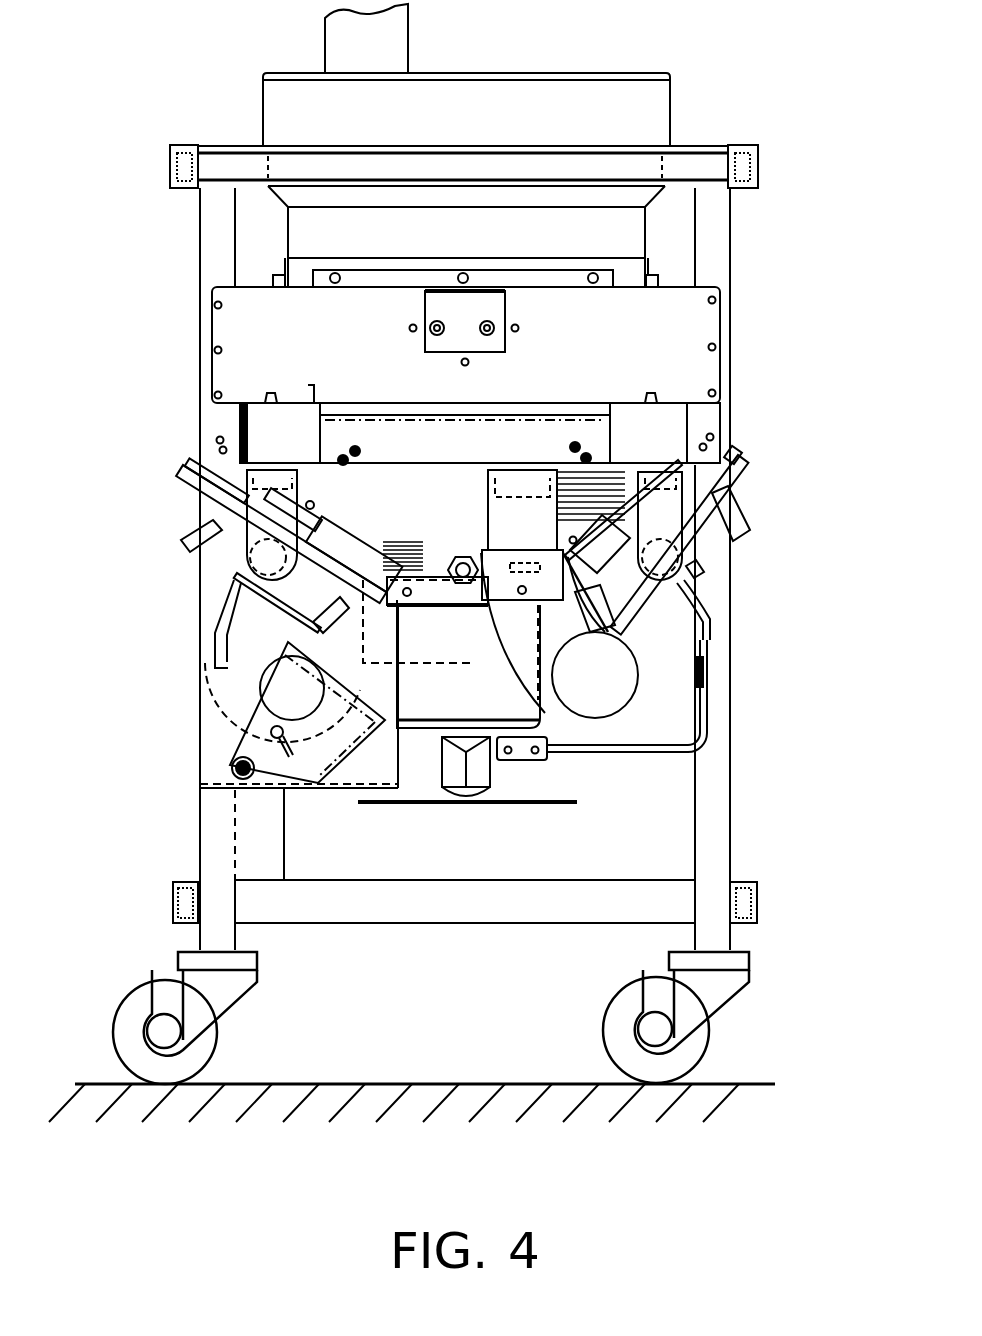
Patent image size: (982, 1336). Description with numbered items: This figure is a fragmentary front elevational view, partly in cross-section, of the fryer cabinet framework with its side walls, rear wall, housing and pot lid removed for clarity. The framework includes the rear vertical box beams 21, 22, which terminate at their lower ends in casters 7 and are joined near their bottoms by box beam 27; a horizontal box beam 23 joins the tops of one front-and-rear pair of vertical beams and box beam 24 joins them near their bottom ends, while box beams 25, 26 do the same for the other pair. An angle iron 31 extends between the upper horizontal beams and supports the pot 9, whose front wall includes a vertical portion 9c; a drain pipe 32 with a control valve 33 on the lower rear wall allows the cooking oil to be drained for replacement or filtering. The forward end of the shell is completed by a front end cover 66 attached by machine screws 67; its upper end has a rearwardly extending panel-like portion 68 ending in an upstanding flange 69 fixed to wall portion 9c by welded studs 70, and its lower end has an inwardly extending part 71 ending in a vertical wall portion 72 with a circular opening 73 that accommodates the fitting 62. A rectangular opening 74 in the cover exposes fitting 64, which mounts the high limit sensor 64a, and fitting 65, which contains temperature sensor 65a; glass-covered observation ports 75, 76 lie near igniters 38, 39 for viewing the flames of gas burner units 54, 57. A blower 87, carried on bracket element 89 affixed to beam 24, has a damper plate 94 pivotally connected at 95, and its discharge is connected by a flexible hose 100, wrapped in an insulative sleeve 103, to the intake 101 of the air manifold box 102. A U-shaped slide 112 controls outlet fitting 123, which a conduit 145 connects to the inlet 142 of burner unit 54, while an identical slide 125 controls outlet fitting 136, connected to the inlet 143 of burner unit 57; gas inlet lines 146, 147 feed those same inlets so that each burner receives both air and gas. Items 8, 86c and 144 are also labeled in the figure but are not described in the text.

The casters 7 is at (205, 1047).
The top frame bar 8 is at (690, 148).
The pot 9 is at (600, 100).
The vertical portion of pot front wall 9c is at (466, 236).
The vertical box beam 21 is at (712, 250).
The vertical box beam 22 is at (212, 246).
The horizontal box beam 23 is at (748, 188).
The box beam 24 is at (742, 882).
The box beam 25 is at (185, 188).
The box beam 26 is at (172, 900).
The box beam 27 is at (393, 905).
The angle iron 31 is at (222, 152).
The drain pipe 32 is at (490, 800).
The control valve 33 is at (444, 768).
The igniter 38 is at (592, 562).
The second igniter 39 is at (336, 572).
The gas burner unit 54 is at (735, 545).
The gas burner unit 57 is at (198, 508).
The fitting 62 is at (420, 612).
The fitting 64 is at (434, 324).
The high limit sensor 64a is at (427, 331).
The fitting 65 is at (490, 324).
The sensor 65a is at (500, 345).
The front end cover 66 is at (692, 322).
The machine screws 67 is at (216, 348).
The rearwardly extending panel-like portion 68 is at (650, 282).
The upstanding flange 69 is at (500, 275).
The studs 70 is at (335, 274).
The inwardly extending part 71 is at (428, 534).
The vertical wall portion 72 is at (412, 625).
The circular opening 73 is at (460, 555).
The rectangular opening 74 is at (432, 357).
The observation port 75 is at (600, 500).
The observation port 76 is at (313, 505).
The feed conduit 86c is at (398, 30).
The blower 87 is at (226, 598).
The bracket element 89 is at (208, 832).
The damper plate 94 is at (300, 800).
The pivot connection 95 is at (240, 766).
The flexible hose 100 is at (498, 500).
The intake 101 is at (510, 500).
The air manifold box 102 is at (490, 403).
The insulative sleeve 103 is at (597, 716).
The U-shaped slide 112 is at (735, 460).
The outlet fitting 123 is at (713, 432).
The slide 125 is at (238, 414).
The air manifold outlet fitting 136 is at (255, 460).
The inlet 142 is at (700, 580).
The inlet 143 is at (215, 585).
The right cylinder 144 is at (705, 533).
The conduit 145 is at (245, 530).
The gas inlet line 146 is at (706, 625).
The gas inlet line 147 is at (214, 655).